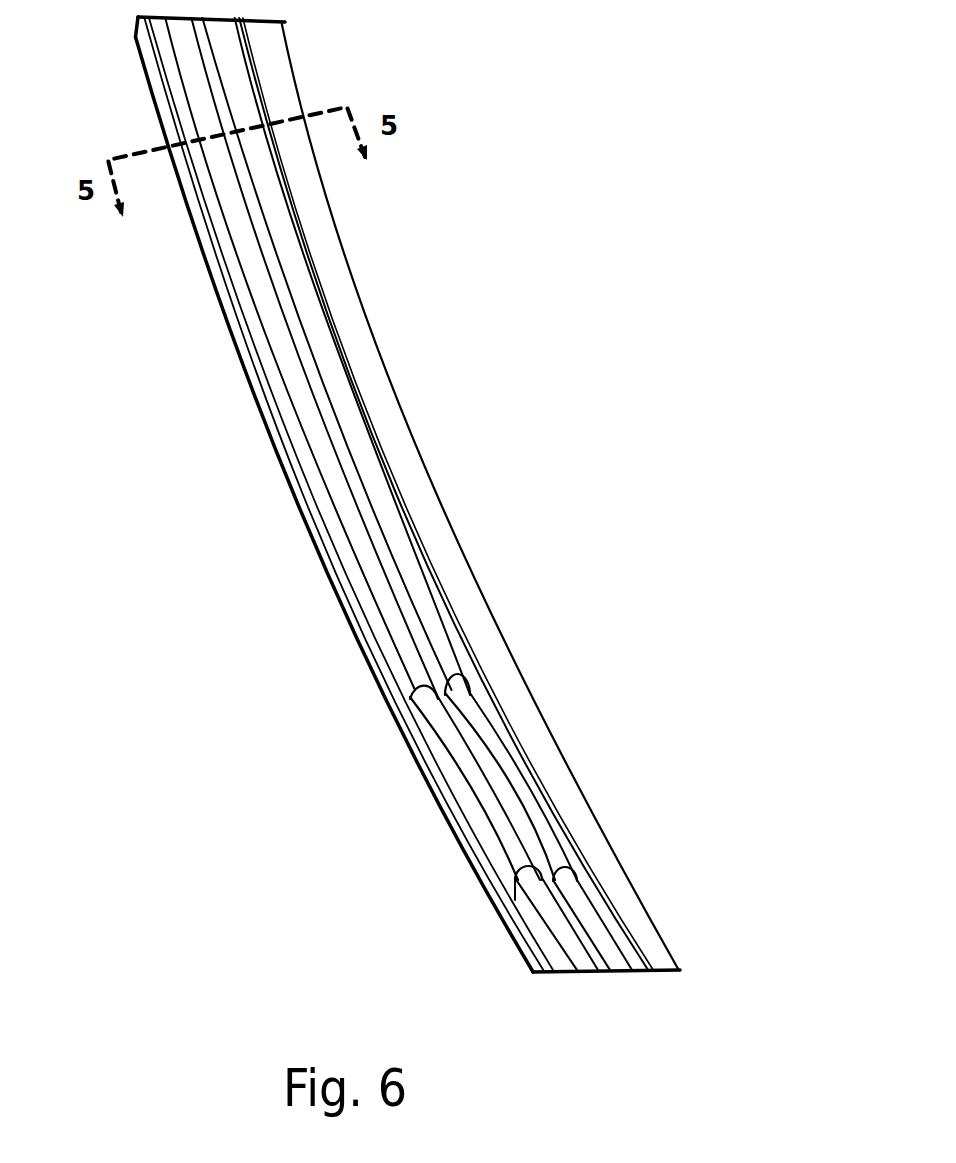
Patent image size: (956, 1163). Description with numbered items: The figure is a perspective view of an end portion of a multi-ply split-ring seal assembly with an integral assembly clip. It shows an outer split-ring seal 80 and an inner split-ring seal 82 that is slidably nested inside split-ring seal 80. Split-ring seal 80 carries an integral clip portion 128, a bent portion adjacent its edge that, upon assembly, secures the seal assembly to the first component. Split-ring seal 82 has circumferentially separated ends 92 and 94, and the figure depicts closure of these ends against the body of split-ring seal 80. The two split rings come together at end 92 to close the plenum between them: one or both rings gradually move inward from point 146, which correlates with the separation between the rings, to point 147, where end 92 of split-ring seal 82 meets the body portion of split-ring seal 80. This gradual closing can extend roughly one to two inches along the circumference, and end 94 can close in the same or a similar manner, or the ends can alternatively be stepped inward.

The integral clip portion 128 is at (476, 562).
The split-ring seal 80 is at (495, 765).
The split-ring seal 82 is at (478, 676).
The end 92 is at (423, 690).
The end 94 is at (515, 858).
The point 146 is at (172, 170).
The point 147 is at (410, 698).